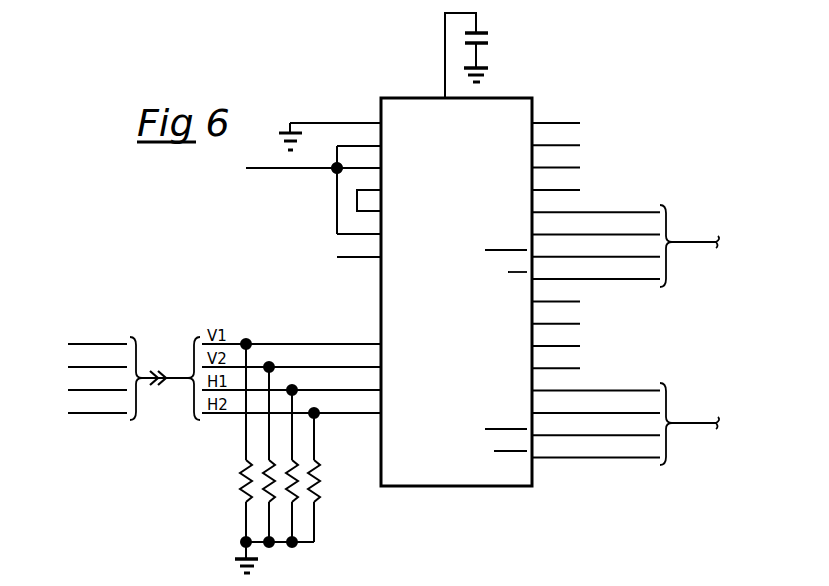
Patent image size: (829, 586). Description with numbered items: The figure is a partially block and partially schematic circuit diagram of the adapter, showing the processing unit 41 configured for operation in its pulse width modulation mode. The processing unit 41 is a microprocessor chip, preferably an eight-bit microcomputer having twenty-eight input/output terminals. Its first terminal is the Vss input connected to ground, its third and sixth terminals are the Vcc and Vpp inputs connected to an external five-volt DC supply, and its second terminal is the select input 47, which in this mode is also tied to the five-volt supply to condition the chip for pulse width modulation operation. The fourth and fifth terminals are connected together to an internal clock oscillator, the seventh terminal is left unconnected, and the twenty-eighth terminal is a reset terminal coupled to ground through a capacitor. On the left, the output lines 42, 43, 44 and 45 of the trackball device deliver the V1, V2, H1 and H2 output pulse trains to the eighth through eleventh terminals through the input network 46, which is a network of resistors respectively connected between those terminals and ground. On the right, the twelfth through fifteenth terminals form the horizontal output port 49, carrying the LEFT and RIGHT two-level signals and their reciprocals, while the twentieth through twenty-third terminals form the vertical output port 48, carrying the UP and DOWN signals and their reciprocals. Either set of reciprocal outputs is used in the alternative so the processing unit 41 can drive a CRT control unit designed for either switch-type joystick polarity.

The processing unit 41 is at (513, 95).
The output line 42 is at (68, 344).
The output line 43 is at (68, 367).
The output line 44 is at (68, 390).
The output line 45 is at (68, 413).
The input network 46 is at (238, 508).
The select input 47 is at (348, 148).
The vertical output port 48 is at (673, 241).
The horizontal output port 49 is at (672, 421).